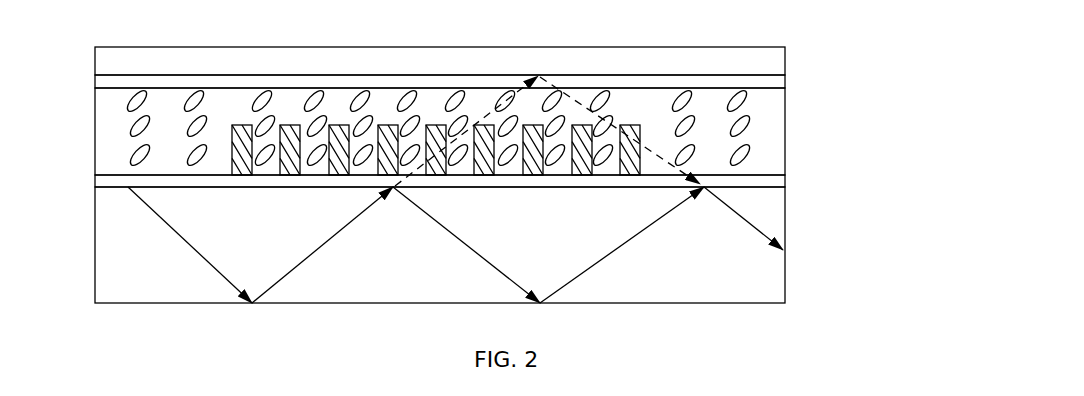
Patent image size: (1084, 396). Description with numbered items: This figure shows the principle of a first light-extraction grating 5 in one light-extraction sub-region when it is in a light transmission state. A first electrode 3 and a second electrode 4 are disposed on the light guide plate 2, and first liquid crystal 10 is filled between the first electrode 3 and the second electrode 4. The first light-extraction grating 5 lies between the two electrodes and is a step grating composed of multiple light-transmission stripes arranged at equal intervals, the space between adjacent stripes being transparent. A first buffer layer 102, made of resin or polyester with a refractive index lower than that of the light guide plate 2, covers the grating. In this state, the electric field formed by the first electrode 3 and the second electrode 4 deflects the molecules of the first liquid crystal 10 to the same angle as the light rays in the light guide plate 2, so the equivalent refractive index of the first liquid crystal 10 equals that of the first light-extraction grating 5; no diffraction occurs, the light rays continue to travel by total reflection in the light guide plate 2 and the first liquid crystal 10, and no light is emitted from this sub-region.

The first buffer layer 102 is at (755, 61).
The first electrode 3 is at (755, 81).
The first liquid crystal 10 is at (755, 127).
The first light-extraction grating 5 is at (645, 155).
The second electrode 4 is at (763, 182).
The light guide plate 2 is at (760, 260).